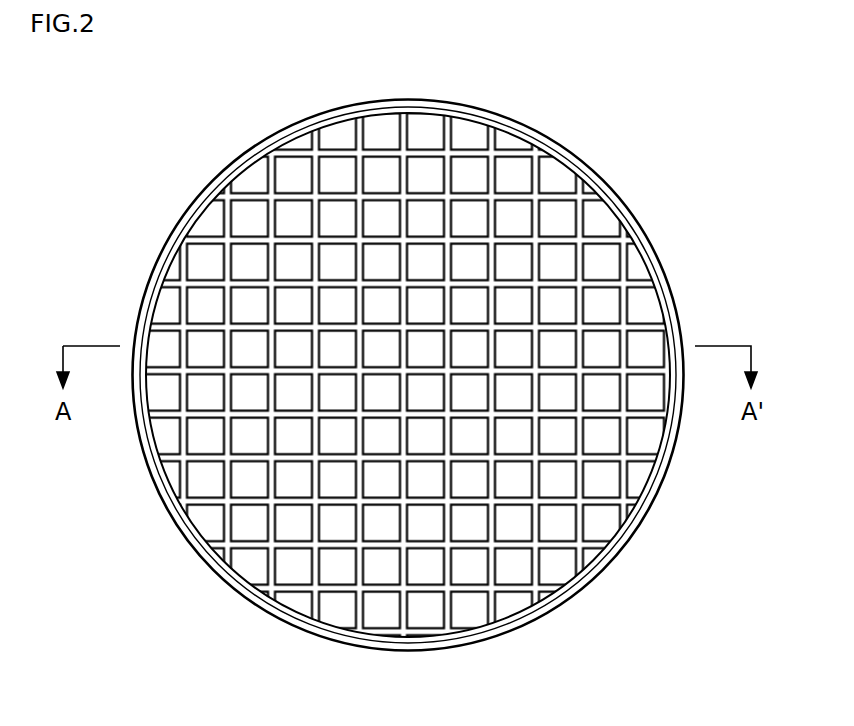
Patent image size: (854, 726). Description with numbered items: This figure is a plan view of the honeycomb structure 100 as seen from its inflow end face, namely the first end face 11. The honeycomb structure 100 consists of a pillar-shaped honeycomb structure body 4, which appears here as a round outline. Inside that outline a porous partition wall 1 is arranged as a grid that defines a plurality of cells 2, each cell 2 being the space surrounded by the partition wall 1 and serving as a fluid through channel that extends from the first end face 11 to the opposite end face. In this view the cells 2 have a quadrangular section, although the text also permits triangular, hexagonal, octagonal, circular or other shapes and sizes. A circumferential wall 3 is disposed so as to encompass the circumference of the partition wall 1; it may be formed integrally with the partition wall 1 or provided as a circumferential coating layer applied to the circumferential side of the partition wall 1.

The honeycomb structure 100 is at (746, 66).
The first end face 11 is at (213, 159).
The partition wall 1 is at (517, 198).
The cell 2 is at (555, 262).
The circumferential wall 3 is at (623, 537).
The honeycomb structure body 4 is at (683, 308).